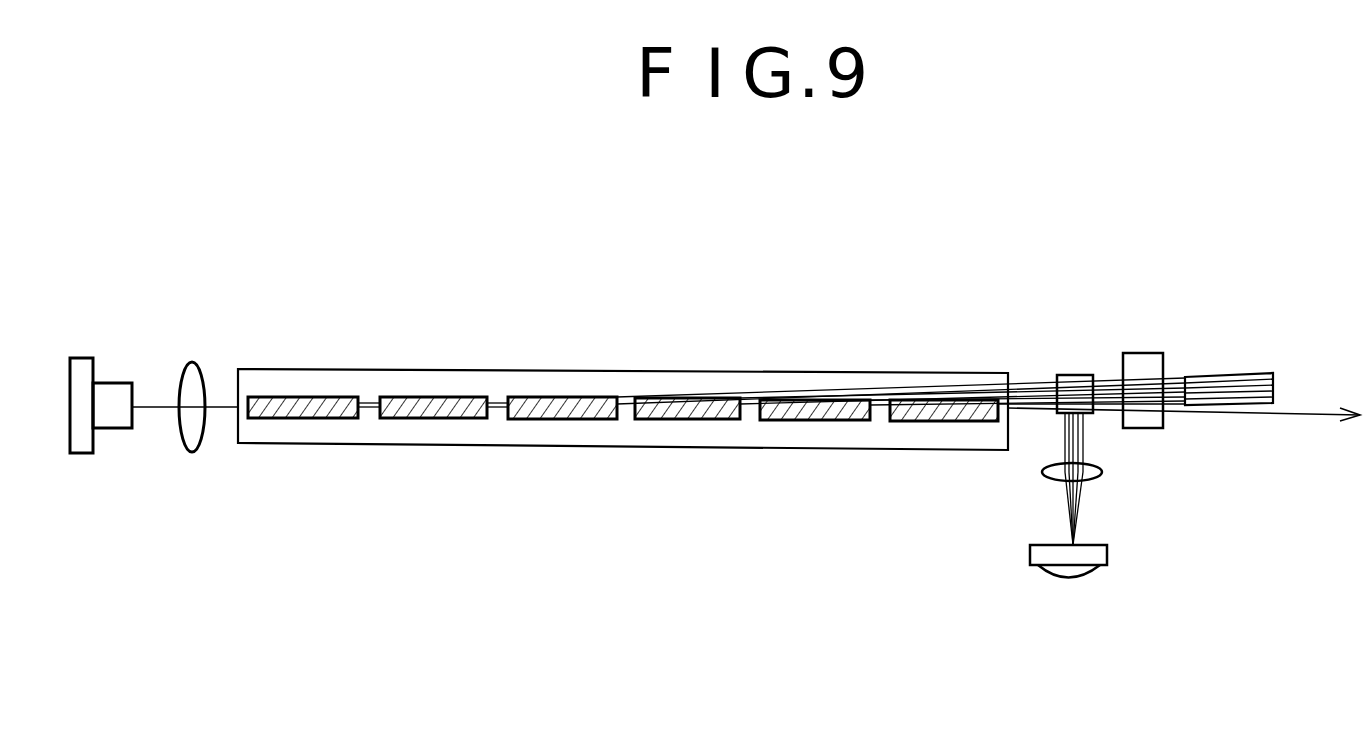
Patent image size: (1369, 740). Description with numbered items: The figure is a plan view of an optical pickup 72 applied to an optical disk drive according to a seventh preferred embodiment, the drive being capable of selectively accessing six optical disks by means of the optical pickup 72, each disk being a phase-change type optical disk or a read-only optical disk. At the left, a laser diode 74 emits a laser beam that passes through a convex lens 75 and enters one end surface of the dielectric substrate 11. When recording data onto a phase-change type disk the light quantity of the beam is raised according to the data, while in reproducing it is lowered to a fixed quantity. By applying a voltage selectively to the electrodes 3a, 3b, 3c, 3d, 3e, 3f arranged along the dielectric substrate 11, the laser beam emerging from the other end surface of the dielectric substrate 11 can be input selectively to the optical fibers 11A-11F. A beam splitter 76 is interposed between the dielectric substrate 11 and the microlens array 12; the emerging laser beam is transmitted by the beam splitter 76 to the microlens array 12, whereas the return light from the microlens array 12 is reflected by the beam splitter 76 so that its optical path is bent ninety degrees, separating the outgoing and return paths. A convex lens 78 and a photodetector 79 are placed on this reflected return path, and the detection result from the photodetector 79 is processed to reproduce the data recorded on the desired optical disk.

The optical pickup 72 is at (308, 285).
The laser diode 74 is at (84, 456).
The convex lens 75 is at (189, 452).
The dielectric substrate 11 is at (660, 382).
The electrode 3a is at (298, 420).
The electrode 3b is at (437, 420).
The electrode 3c is at (560, 421).
The electrode 3d is at (685, 421).
The electrode 3e is at (819, 422).
The electrode 3f is at (945, 423).
The beam splitter 76 is at (1072, 374).
The microlens array 12 is at (1140, 368).
The optical fibers 11A-11F is at (1225, 355).
The convex lens 78 is at (1093, 478).
The photodetector 79 is at (1095, 555).